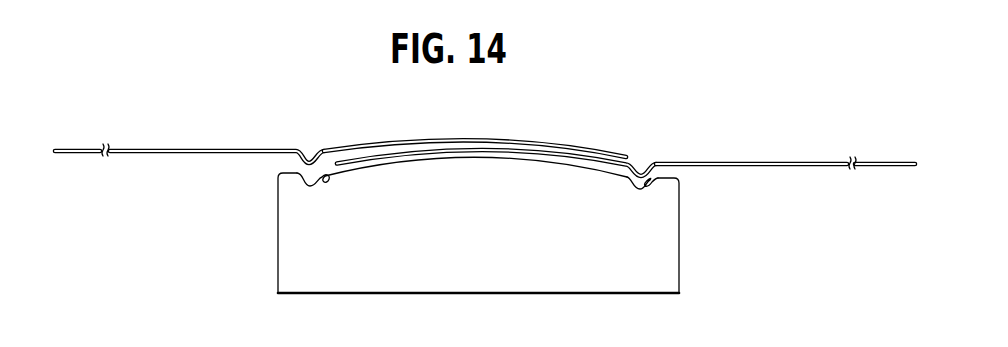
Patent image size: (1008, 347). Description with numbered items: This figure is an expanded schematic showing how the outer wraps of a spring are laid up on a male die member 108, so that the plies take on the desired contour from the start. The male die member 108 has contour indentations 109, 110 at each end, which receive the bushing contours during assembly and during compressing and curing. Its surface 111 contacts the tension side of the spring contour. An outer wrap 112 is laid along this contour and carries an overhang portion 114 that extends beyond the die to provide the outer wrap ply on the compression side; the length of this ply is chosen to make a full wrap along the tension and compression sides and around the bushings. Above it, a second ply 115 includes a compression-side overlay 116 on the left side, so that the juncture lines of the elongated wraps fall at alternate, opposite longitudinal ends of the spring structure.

The male die member 108 is at (508, 295).
The contour indentation 109 is at (324, 180).
The contour indentation 110 is at (647, 188).
The surface 111 is at (447, 159).
The outer wrap 112 is at (545, 157).
The overhang portion 114 is at (756, 161).
The second ply 115 is at (487, 139).
The compression-side overlay 116 is at (190, 148).